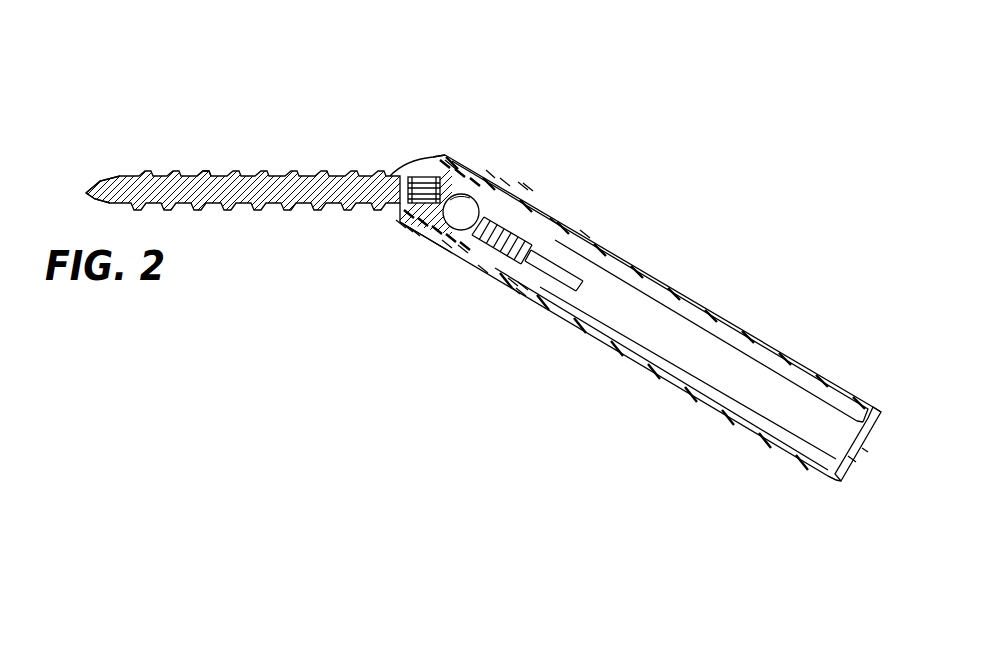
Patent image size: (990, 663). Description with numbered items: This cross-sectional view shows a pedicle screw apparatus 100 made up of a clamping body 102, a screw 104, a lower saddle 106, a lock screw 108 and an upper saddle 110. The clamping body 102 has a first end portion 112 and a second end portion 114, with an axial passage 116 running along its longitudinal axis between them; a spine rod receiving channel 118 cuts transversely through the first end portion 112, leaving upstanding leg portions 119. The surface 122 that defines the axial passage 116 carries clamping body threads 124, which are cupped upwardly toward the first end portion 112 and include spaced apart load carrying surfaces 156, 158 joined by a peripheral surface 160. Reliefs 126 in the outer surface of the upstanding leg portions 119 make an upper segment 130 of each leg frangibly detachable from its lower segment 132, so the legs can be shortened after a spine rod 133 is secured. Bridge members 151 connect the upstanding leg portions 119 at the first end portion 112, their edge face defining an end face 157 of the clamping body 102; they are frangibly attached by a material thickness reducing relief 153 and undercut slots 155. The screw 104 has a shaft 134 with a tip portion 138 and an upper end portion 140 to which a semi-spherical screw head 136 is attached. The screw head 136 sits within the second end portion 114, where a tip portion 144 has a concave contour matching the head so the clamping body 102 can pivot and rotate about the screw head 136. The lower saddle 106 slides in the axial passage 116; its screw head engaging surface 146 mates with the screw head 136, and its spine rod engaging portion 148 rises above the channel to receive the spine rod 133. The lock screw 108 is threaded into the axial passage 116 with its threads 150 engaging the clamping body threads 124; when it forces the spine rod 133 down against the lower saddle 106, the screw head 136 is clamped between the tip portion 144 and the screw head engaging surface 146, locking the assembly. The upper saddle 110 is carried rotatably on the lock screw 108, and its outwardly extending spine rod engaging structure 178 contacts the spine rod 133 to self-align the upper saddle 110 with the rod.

The pedicle screw apparatus 100 is at (304, 150).
The clamping body 102 is at (507, 187).
The screw 104 is at (252, 212).
The lower saddle 106 is at (458, 185).
The lock screw 108 is at (478, 250).
The upper saddle 110 is at (530, 200).
The first end portion 112 is at (855, 462).
The second end portion 114 is at (457, 188).
The axial passage 116 is at (843, 430).
The spine rod receiving channel 118 is at (448, 245).
The upstanding leg portions 119 is at (522, 192).
The surface 122 is at (497, 186).
The clamping body threads 124 is at (558, 232).
The reliefs 126 is at (505, 272).
The upper segment 130 is at (565, 252).
The lower segment 132 is at (517, 188).
The spine rod 133 is at (537, 193).
The shaft 134 is at (204, 174).
The screw head 136 is at (417, 160).
The tip portion 138 is at (92, 188).
The upper end portion 140 is at (392, 172).
The tip portion 144 is at (395, 218).
The screw head engaging surface 146 is at (410, 225).
The spine rod engaging portion 148 is at (490, 172).
The threads 150 is at (555, 213).
The bridge members 151 is at (858, 453).
The material thickness reducing relief 153 is at (828, 482).
The undercut slots 155 is at (827, 472).
The load carrying surface 156 is at (525, 292).
The end face 157 is at (879, 423).
The load carrying surface 158 is at (524, 295).
The peripheral surface 160 is at (533, 300).
The spine rod engaging structure 178 is at (465, 250).